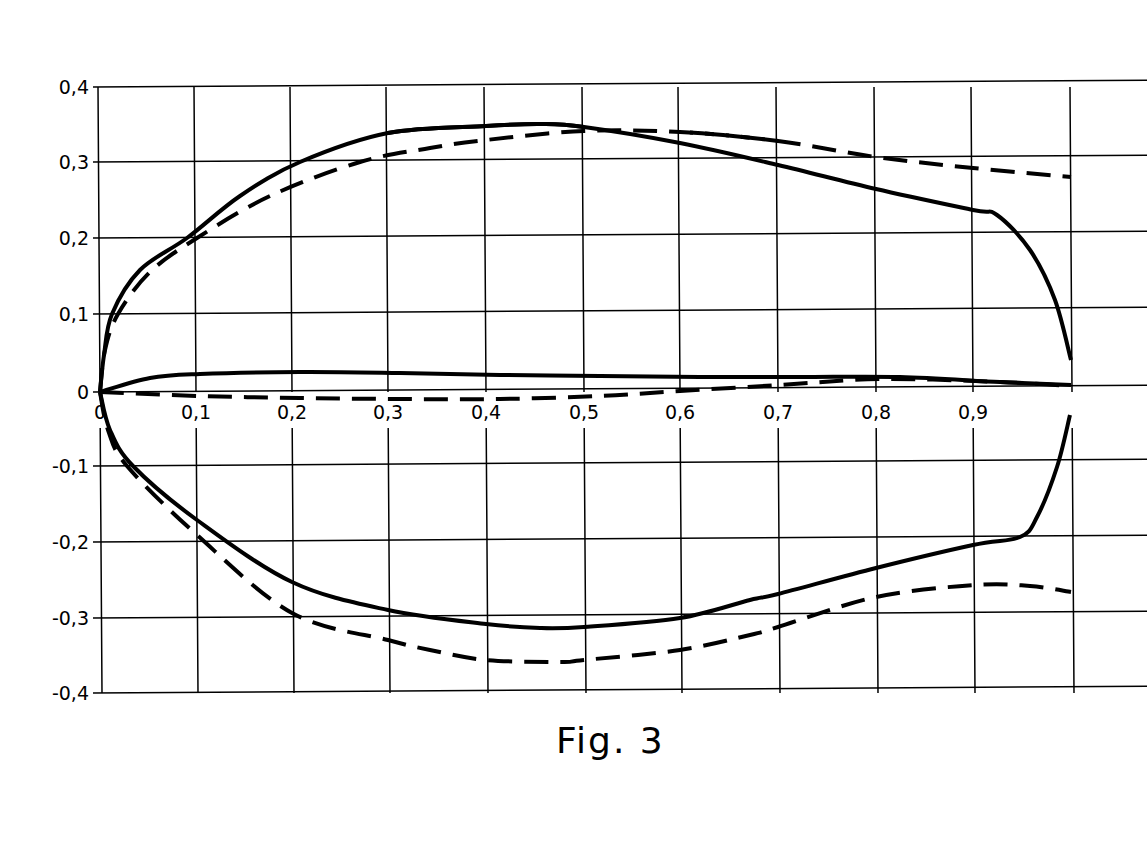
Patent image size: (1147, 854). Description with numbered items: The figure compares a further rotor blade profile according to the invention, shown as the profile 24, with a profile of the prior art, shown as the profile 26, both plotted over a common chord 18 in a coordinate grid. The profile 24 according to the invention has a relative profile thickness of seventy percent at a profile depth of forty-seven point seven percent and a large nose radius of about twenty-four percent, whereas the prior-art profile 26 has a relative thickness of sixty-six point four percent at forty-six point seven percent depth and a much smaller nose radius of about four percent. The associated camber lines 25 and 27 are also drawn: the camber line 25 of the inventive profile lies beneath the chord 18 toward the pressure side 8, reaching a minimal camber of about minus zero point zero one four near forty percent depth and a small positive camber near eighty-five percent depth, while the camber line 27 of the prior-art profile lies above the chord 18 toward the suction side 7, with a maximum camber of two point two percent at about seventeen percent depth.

The suction side 7 is at (385, 112).
The pressure side 8 is at (325, 653).
The chord 18 is at (332, 390).
The profile according to the invention 24 is at (497, 122).
The camber line of the RE-W-70-B9 profile 25 is at (508, 400).
The profile according to the prior art 26 is at (700, 133).
The camber line of the FX 79-W-660A profile 27 is at (398, 374).